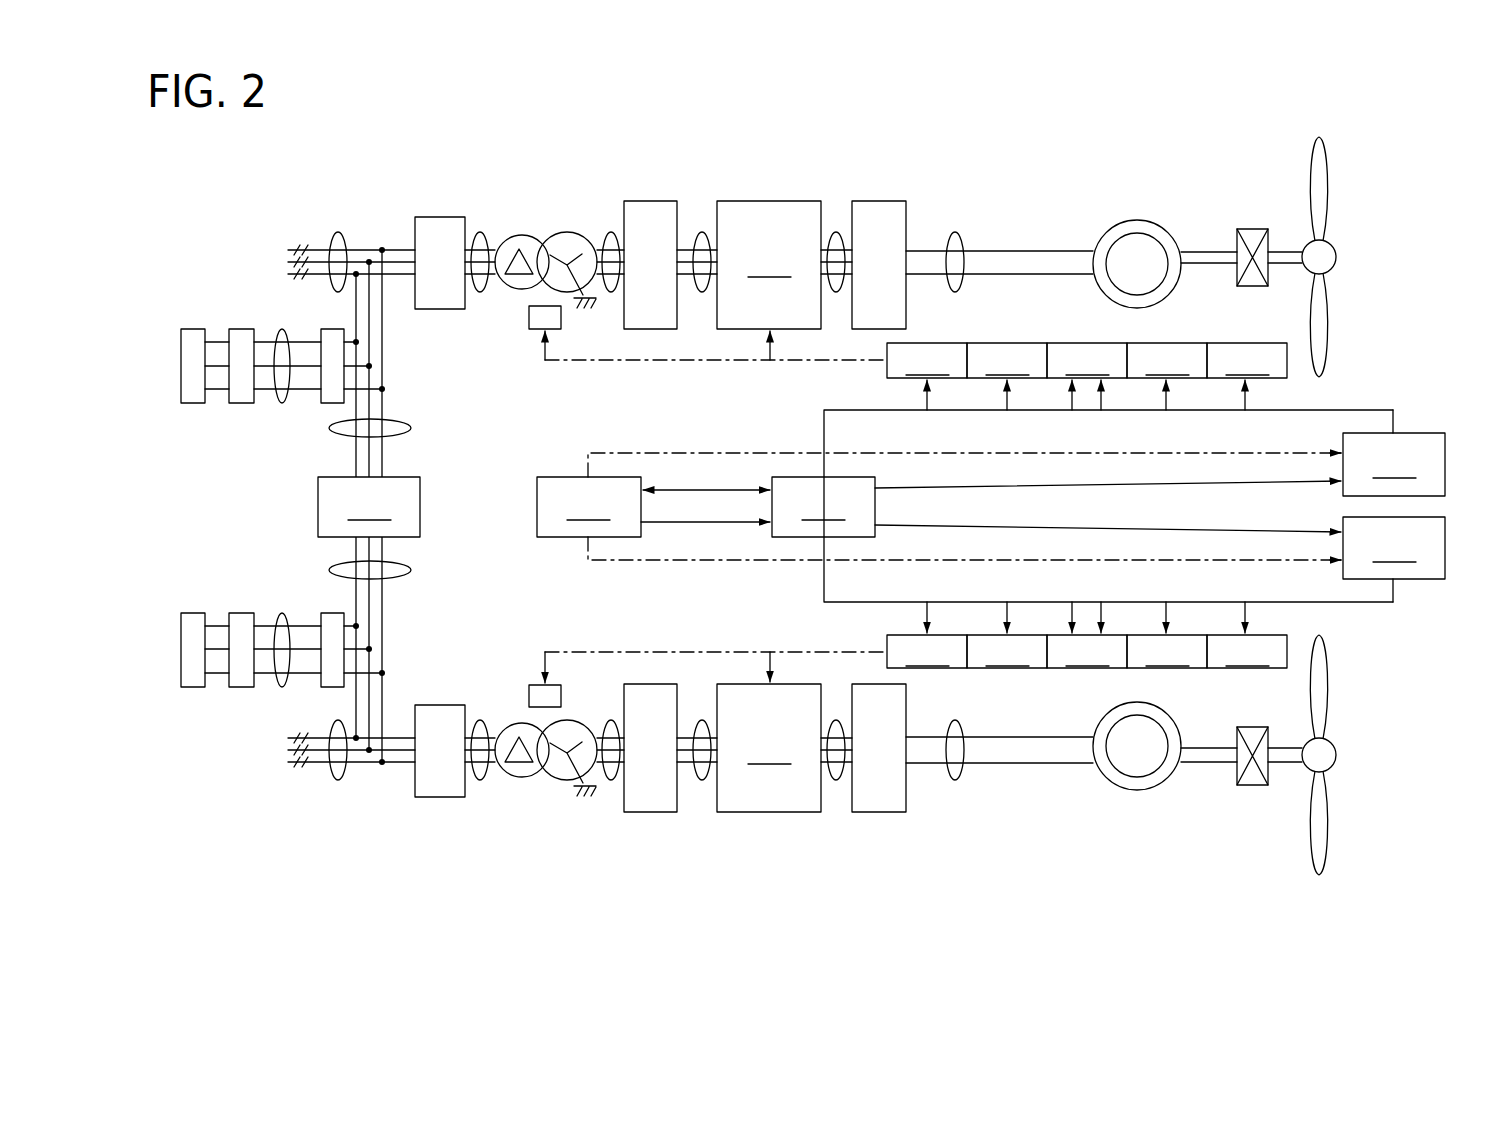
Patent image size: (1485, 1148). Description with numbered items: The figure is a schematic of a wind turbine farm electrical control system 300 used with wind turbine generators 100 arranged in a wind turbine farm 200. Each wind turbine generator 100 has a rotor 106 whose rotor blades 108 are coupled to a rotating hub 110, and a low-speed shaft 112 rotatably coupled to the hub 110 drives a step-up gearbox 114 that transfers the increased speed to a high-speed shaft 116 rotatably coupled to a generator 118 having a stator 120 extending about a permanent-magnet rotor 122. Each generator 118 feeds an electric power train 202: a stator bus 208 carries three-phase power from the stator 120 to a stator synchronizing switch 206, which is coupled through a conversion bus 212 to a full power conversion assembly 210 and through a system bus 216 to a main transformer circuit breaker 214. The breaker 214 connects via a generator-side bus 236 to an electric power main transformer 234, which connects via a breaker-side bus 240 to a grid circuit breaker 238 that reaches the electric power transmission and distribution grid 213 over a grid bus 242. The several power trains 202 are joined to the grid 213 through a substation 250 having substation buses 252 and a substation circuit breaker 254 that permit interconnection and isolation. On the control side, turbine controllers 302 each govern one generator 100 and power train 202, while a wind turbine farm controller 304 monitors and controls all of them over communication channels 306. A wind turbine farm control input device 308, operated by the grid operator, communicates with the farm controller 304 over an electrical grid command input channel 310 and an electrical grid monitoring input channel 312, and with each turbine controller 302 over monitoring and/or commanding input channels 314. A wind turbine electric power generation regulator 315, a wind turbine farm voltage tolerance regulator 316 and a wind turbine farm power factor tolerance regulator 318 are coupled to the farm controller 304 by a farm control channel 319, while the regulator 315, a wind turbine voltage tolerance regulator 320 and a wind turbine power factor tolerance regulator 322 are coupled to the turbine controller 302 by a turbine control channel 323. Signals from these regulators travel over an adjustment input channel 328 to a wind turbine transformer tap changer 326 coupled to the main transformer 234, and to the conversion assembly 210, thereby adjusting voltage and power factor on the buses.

The wind turbine generator 100 is at (786, 505).
The rotor 106 is at (1372, 506).
The rotor blades 108 is at (1330, 190).
The hub 110 is at (1337, 250).
The low-speed shaft 112 is at (1285, 251).
The step-up gearbox 114 is at (1251, 229).
The high-speed shaft 116 is at (1208, 245).
The generator 118 is at (1128, 505).
The stator 120 is at (1156, 224).
The rotor 122 is at (1130, 243).
The wind turbine farm 200 is at (272, 172).
The electric power train 202 is at (612, 162).
The stator synchronizing switch 206 is at (878, 201).
The stator bus 208 is at (954, 232).
The full power conversion assembly 210 is at (769, 506).
The conversion bus 212 is at (835, 232).
The electric power transmission and distribution grid 213 is at (288, 243).
The main transformer circuit breaker 214 is at (651, 201).
The system bus 216 is at (702, 232).
The electric power main transformer 234 is at (566, 233).
The generator-side bus 236 is at (610, 230).
The grid circuit breaker 238 is at (440, 217).
The breaker-side bus 240 is at (480, 232).
The grid bus 242 is at (338, 232).
The substation 250 is at (405, 459).
The substation buses 252 is at (282, 330).
The substation circuit breaker 254 is at (330, 400).
The wind turbine farm electrical control system 300 is at (523, 585).
The turbine controller 302 is at (1394, 506).
The wind turbine farm controller 304 is at (823, 507).
The communication channels 306 is at (1168, 529).
The wind turbine farm control input device 308 is at (589, 507).
The electrical grid command input channel 310 is at (668, 523).
The electrical grid monitoring input channel 312 is at (733, 488).
The monitoring and/or commanding input channels 314 is at (588, 453).
The wind turbine electric power generation regulator 315 is at (1087, 505).
The wind turbine farm voltage tolerance regulator 316 is at (927, 505).
The wind turbine farm power factor tolerance regulator 318 is at (1007, 505).
The farm control channel 319 is at (824, 416).
The wind turbine voltage tolerance regulator 320 is at (1247, 505).
The wind turbine power factor tolerance regulator 322 is at (1167, 505).
The turbine control channel 323 is at (1350, 408).
The wind turbine transformer tap changer 326 is at (527, 318).
The adjustment input channel 328 is at (608, 362).